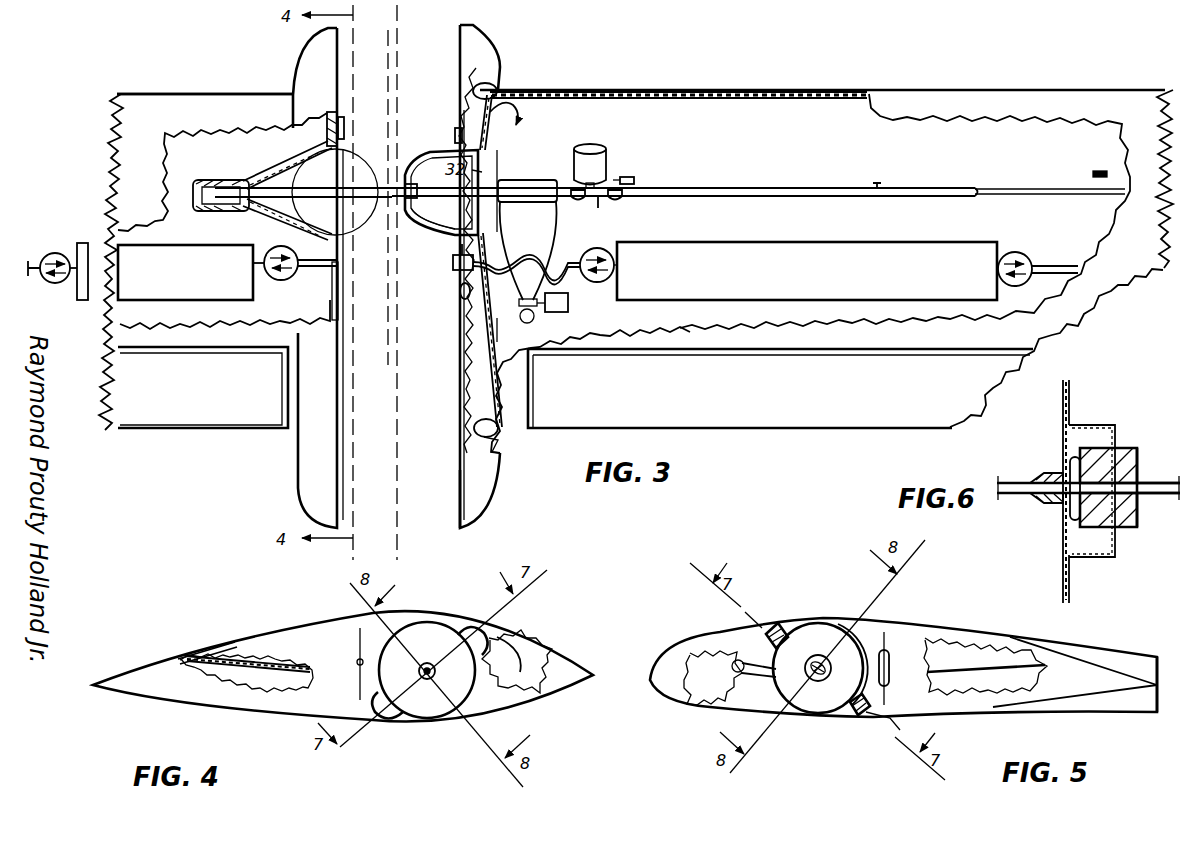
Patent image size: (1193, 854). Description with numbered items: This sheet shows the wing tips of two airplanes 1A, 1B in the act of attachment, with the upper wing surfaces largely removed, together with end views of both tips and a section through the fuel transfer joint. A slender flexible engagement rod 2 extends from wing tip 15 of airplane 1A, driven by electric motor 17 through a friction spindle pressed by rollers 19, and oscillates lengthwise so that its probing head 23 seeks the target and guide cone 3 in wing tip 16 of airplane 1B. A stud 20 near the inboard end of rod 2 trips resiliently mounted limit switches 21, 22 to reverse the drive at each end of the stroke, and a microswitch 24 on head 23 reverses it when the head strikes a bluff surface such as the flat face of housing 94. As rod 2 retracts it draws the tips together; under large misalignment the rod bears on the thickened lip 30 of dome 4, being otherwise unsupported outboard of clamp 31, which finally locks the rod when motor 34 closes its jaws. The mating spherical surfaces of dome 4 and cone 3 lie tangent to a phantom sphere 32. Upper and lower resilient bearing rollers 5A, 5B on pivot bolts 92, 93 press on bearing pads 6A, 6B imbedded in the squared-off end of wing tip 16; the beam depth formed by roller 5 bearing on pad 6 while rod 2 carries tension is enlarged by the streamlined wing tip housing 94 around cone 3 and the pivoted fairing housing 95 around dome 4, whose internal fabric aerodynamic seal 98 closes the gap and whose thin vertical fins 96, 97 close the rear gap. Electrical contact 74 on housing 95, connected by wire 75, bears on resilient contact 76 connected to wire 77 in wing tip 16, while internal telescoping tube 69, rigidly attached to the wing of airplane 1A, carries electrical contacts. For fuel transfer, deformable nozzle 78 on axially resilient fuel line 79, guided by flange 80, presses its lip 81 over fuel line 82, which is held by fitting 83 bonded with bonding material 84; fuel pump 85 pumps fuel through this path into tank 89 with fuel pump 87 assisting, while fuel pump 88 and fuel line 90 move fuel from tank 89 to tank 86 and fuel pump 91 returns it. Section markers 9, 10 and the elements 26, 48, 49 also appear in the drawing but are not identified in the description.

In FIG. 3, the airplane 1A is at (1068, 90).
In FIG. 3, the airplane 1B is at (117, 94).
In FIG. 3, the engagement rod 2 is at (718, 188).
In FIG. 4, the engagement rod 2 is at (418, 672).
In FIG. 3, the cone 3 is at (273, 203).
In FIG. 4, the cone 3 is at (427, 670).
In FIG. 3, the dome 4 is at (430, 152).
In FIG. 5, the dome 4 is at (820, 668).
In FIG. 3, the bearing roller 5 is at (397, 15).
In FIG. 5, the upper resilient bearing roller 5A is at (784, 622).
In FIG. 5, the lower resilient bearing roller 5B is at (855, 716).
In FIG. 4, the bearing pad 6 is at (357, 640).
In FIG. 5, the bearing pad 6 is at (910, 639).
In FIG. 4, the upper resilient bearing pad 6A is at (476, 625).
In FIG. 4, the lower resilient bearing pad 6B is at (390, 718).
In FIG. 3, the section line 9- 9 is at (553, 160).
In FIG. 3, the section line 10- 10 is at (387, 98).
In FIG. 3, the wing tip 15 is at (602, 92).
In FIG. 5, the wing tip 15 is at (960, 620).
In FIG. 3, the wing tip 16 is at (246, 95).
In FIG. 6, the wing tip 16 is at (1062, 389).
In FIG. 4, the wing tip 16 is at (278, 626).
In FIG. 3, the motor 17 is at (604, 148).
In FIG. 3, the rollers 19 is at (578, 200).
In FIG. 3, the stud 20 is at (881, 184).
In FIG. 3, the limit switch 21 is at (628, 176).
In FIG. 3, the limit switch 22 is at (1112, 175).
In FIG. 3, the head 23 is at (232, 206).
In FIG. 3, the microswitch 24 is at (220, 187).
In FIG. 3, the shaft end bearing 26 is at (196, 192).
In FIG. 4, the shaft end bearing 26 is at (436, 672).
In FIG. 3, the lip 30 is at (424, 210).
In FIG. 3, the clamp 31 is at (527, 251).
In FIG. 3, the phantom sphere 32 is at (298, 172).
In FIG. 3, the motor 34 is at (569, 308).
In FIG. 3, the valve 48 is at (597, 209).
In FIG. 3, the valve 49 is at (614, 200).
In FIG. 3, the internal telescoping tube 69 is at (1010, 189).
In FIG. 3, the electrical contact 74 is at (456, 130).
In FIG. 3, the wire 75 is at (515, 120).
In FIG. 3, the electrical contact 76 is at (344, 127).
In FIG. 3, the wire 77 is at (326, 136).
In FIG. 3, the deformable nozzle 78 is at (455, 262).
In FIG. 6, the deformable nozzle 78 is at (1138, 454).
In FIG. 3, the fuel line 79 is at (509, 266).
In FIG. 6, the fuel line 79 is at (1160, 494).
In FIG. 3, the flange 80 is at (461, 290).
In FIG. 6, the flange 80 is at (1090, 426).
In FIG. 6, the deformable lip 81 is at (1078, 522).
In FIG. 3, the fuel line 82 is at (320, 262).
In FIG. 6, the fuel line 82 is at (1015, 482).
In FIG. 6, the fitting 83 is at (1050, 503).
In FIG. 6, the bonding material 84 is at (1078, 442).
In FIG. 3, the fuel pump 85 is at (282, 281).
In FIG. 3, the tank 86 is at (80, 236).
In FIG. 3, the fuel pump 87 is at (597, 282).
In FIG. 3, the fuel pump 88 is at (1020, 255).
In FIG. 3, the tank 89 is at (726, 278).
In FIG. 3, the fuel line 90 is at (41, 258).
In FIG. 3, the fuel pump 91 is at (52, 284).
In FIG. 5, the pivot bolt 92 is at (770, 622).
In FIG. 5, the pivot bolt 93 is at (884, 722).
In FIG. 3, the wing tip housing 94 is at (312, 52).
In FIG. 4, the wing tip housing 94 is at (186, 690).
In FIG. 3, the wing tip fairing housing 95 is at (488, 56).
In FIG. 5, the wing tip fairing housing 95 is at (1060, 678).
In FIG. 3, the aerodynamic fin 96 is at (462, 478).
In FIG. 5, the aerodynamic fin 96 is at (1156, 657).
In FIG. 5, the aerodynamic fin 97 is at (1140, 714).
In FIG. 3, the aerodynamic seal 98 is at (498, 83).
In FIG. 4, the aerodynamic seal 98 is at (517, 661).
In FIG. 5, the aerodynamic seal 98 is at (730, 678).